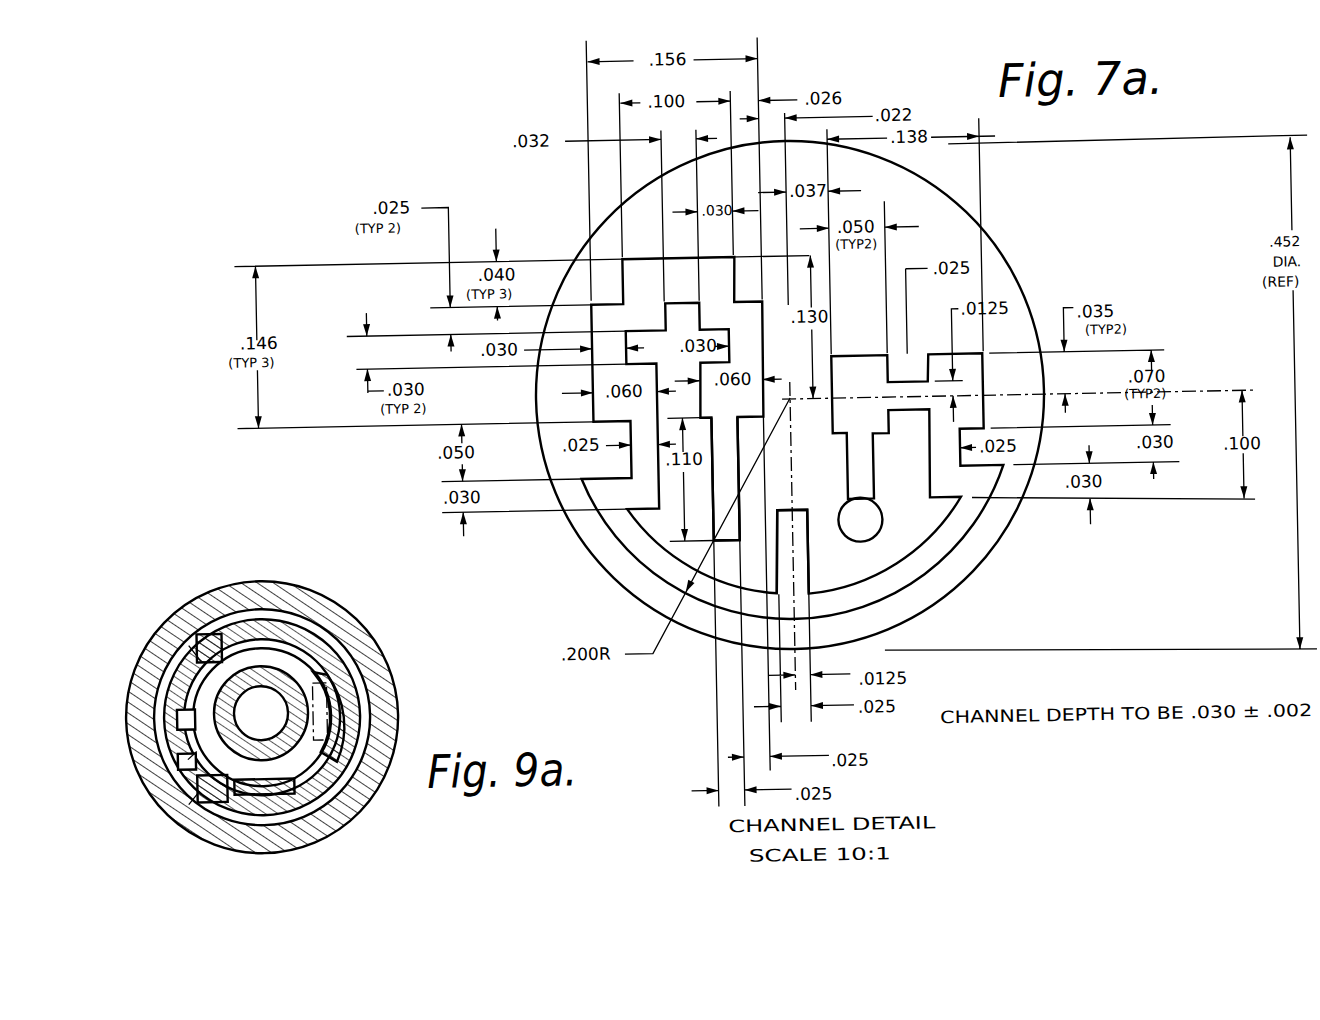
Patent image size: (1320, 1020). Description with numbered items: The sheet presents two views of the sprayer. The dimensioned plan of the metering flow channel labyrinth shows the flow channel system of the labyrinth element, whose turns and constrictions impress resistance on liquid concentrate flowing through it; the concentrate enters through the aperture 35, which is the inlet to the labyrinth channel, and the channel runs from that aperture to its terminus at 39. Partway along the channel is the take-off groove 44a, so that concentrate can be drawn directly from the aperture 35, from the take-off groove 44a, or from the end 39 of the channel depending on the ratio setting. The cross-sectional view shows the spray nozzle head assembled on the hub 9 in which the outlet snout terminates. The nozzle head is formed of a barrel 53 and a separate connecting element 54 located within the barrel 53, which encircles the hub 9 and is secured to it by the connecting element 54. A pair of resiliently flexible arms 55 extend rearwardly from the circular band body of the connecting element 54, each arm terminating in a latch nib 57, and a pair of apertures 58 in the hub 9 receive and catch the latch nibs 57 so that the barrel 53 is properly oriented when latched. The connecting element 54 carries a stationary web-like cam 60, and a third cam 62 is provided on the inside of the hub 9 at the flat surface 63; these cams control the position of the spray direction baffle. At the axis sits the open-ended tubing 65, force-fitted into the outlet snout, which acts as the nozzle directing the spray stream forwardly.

In FIG. 9A, the hub 9 is at (301, 606).
In FIG. 7A, the aperture 35 is at (866, 537).
In FIG. 7A, the terminus of labyrinth channel 39 is at (723, 527).
In FIG. 7A, the take-off groove 44a is at (792, 527).
In FIG. 9A, the barrel 53 is at (312, 838).
In FIG. 9A, the connecting element 54 is at (181, 748).
In FIG. 9A, the resiliently flexible arms 55 is at (171, 751).
In FIG. 9A, the latch nib 57 is at (204, 804).
In FIG. 9A, the apertures 58 is at (181, 793).
In FIG. 9A, the cam 60 is at (334, 784).
In FIG. 9A, the third cam 62 is at (358, 616).
In FIG. 9A, the flat surface 63 is at (352, 716).
In FIG. 9A, the tubing 65 is at (274, 671).